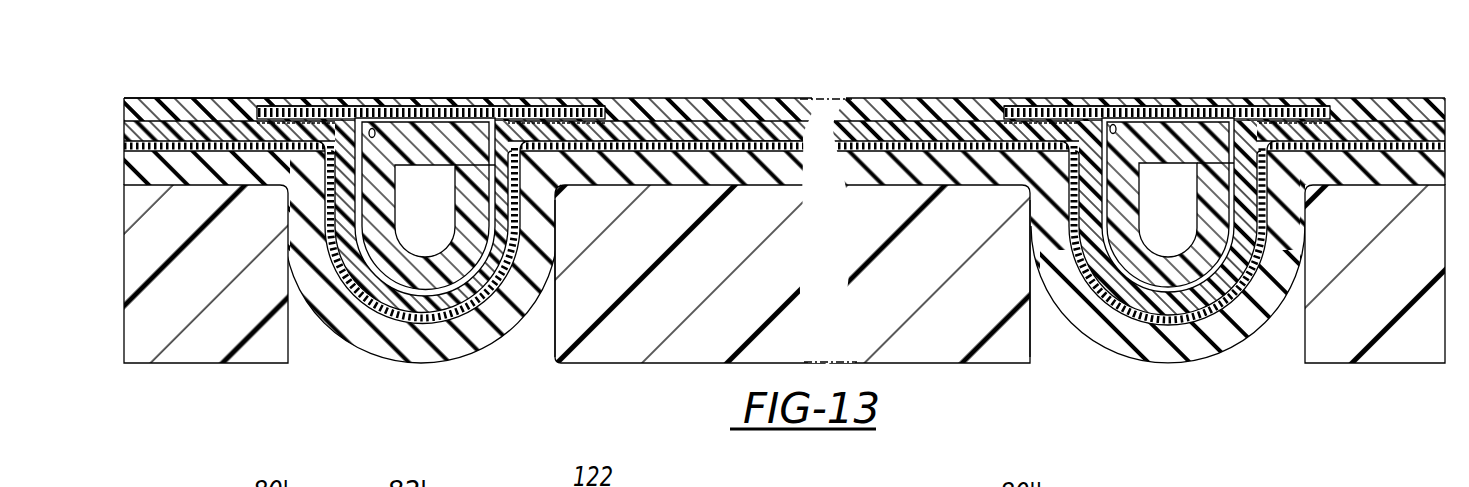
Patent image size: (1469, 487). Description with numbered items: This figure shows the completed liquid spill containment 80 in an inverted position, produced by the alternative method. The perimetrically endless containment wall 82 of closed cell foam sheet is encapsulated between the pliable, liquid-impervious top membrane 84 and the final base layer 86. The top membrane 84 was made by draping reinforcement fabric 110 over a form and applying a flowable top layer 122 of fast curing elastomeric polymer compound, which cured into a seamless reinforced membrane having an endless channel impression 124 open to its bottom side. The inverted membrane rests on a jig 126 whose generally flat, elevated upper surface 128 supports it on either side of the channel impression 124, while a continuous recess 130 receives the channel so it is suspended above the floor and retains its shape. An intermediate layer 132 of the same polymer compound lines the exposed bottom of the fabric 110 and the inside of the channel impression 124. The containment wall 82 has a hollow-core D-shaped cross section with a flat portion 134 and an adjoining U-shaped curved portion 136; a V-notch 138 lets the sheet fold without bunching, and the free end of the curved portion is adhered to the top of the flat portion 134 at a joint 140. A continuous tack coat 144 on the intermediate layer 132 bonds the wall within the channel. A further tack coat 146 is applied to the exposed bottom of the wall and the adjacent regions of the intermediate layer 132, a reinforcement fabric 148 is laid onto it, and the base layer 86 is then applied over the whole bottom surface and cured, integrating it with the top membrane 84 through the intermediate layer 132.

The liquid spill containment 80 is at (251, 92).
The containment wall 82 is at (438, 127).
The top membrane 84 is at (722, 133).
The base layer 86 is at (908, 107).
The reinforcement fabric 110 is at (658, 140).
The top layer 122 is at (855, 363).
The channel impression 124 is at (425, 288).
The jig 126 is at (241, 372).
The upper surface 128 is at (153, 185).
The recess 130 is at (556, 340).
The intermediate layer 132 is at (203, 140).
The flat portion 134 is at (467, 123).
The U-shaped curved portion 136 is at (418, 318).
The V-notch 138 is at (395, 130).
The joint 140 is at (483, 130).
The tack coat 144 is at (541, 118).
The tack coat 146 is at (328, 112).
The reinforcement fabric 148 is at (283, 112).